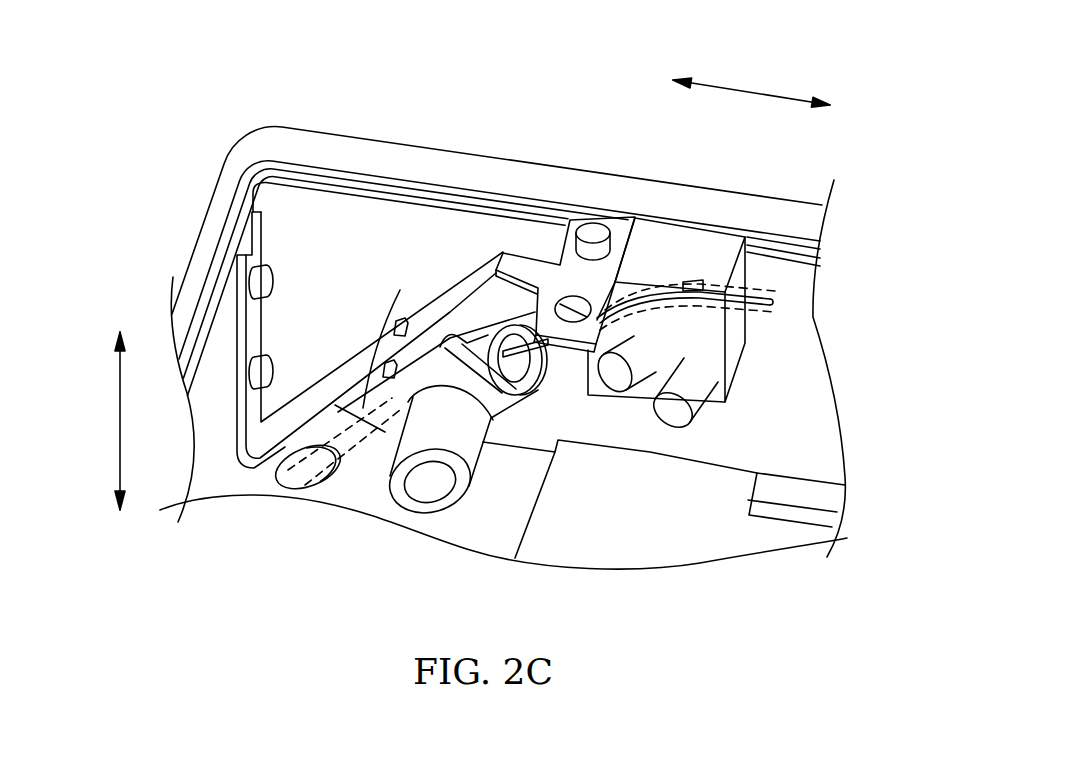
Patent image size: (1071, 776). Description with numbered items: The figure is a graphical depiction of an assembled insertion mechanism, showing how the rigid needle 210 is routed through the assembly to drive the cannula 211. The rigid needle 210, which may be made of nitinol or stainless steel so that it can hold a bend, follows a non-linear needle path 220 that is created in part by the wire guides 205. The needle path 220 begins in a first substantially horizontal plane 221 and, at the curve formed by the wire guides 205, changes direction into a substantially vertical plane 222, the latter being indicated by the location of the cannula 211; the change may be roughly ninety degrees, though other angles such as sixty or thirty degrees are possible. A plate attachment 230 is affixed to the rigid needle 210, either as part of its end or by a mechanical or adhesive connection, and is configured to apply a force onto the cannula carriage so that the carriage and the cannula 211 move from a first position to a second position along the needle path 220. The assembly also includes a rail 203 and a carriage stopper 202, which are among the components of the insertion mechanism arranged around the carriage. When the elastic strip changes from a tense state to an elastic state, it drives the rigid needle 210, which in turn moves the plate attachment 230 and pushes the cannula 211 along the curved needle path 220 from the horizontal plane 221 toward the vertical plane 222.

The carriage stopper 202 is at (522, 255).
The rail 203 is at (257, 244).
The wire guide 205 is at (690, 242).
The rigid needle 210 is at (696, 300).
The cannula 211 is at (314, 472).
The needle path 220 is at (657, 290).
The first substantially horizontal plane 221 is at (753, 90).
The substantially vertical plane 222 is at (117, 383).
The plate attachment 230 is at (500, 362).